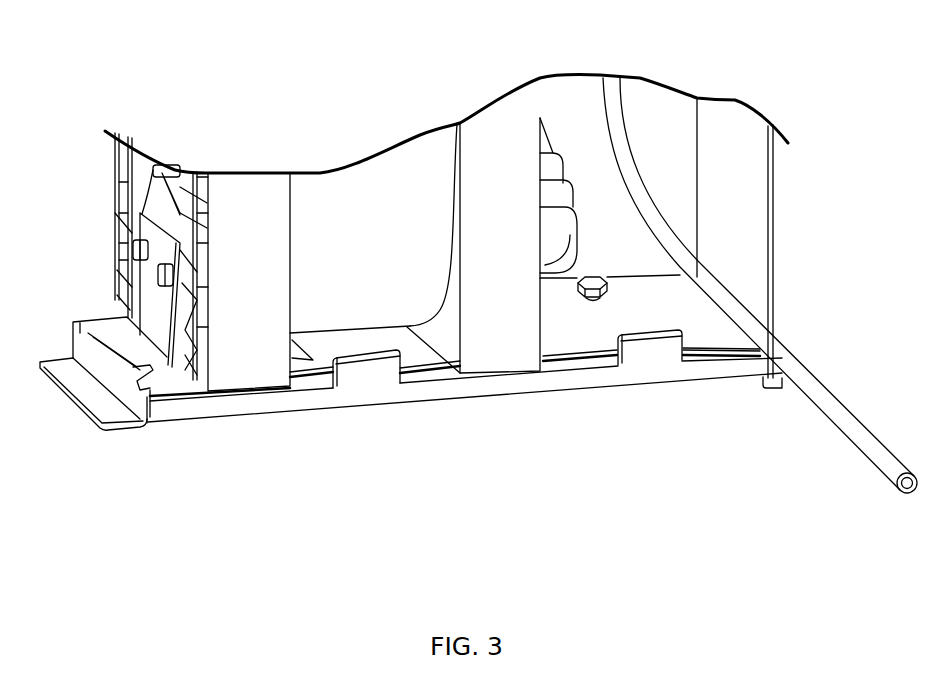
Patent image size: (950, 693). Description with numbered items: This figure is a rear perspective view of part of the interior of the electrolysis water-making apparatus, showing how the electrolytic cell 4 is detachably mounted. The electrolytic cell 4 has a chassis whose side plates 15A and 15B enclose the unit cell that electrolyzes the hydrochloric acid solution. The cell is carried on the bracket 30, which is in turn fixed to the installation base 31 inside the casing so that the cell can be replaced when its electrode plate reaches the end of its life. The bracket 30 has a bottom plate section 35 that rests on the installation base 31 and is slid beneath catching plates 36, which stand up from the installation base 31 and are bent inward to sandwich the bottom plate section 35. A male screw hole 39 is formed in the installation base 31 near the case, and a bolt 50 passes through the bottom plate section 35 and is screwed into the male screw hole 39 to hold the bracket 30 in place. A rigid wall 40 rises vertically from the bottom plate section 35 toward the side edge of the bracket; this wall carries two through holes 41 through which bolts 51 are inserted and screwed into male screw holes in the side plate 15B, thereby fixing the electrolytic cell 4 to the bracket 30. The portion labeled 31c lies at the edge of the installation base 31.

The electrolytic cell 4 is at (412, 166).
The bracket 30 is at (783, 272).
The installation base 31 is at (434, 402).
The flange of base plate 31c is at (120, 357).
The bottom plate section 35 is at (697, 330).
The catching plates 36 is at (112, 327).
The male screw hole 39 is at (593, 302).
The rigid wall of the electrolytic cell 40 is at (163, 325).
The through holes 41 is at (141, 238).
The bolt 50 is at (595, 276).
The bolts 51 is at (132, 247).
The side plate 15A is at (507, 338).
The side plate 15B is at (260, 368).